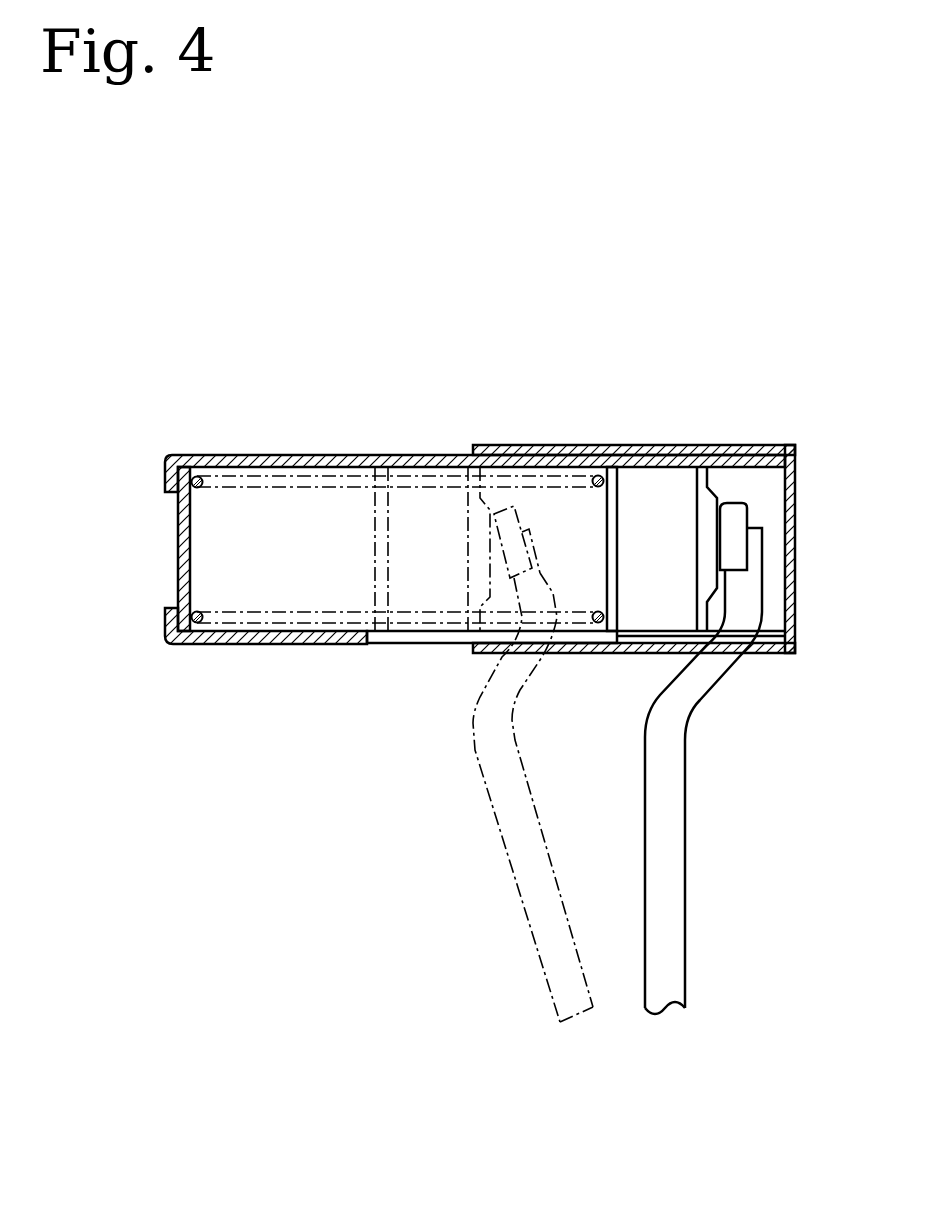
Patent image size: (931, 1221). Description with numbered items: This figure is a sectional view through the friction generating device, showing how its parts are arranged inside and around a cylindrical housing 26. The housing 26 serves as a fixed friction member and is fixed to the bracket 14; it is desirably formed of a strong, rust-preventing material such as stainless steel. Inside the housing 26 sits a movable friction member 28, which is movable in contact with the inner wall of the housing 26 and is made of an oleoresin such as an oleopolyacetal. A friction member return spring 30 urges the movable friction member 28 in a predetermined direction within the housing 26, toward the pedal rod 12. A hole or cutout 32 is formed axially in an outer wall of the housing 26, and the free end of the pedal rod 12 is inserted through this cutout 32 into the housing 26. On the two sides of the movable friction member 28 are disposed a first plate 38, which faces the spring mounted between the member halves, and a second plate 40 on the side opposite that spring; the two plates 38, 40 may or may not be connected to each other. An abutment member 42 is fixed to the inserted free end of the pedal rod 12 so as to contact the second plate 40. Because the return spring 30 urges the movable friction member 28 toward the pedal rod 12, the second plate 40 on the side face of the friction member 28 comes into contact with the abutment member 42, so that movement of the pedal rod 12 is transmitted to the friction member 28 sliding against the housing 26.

The pedal rod 12 is at (525, 842).
The bracket 14 is at (640, 452).
The housing 26 is at (338, 462).
The movable friction member 28 is at (440, 510).
The friction member return spring 30 is at (246, 486).
The cutout 32 is at (398, 638).
The first plate 38 is at (608, 524).
The second plate 40 is at (707, 518).
The abutment member 42 is at (502, 506).